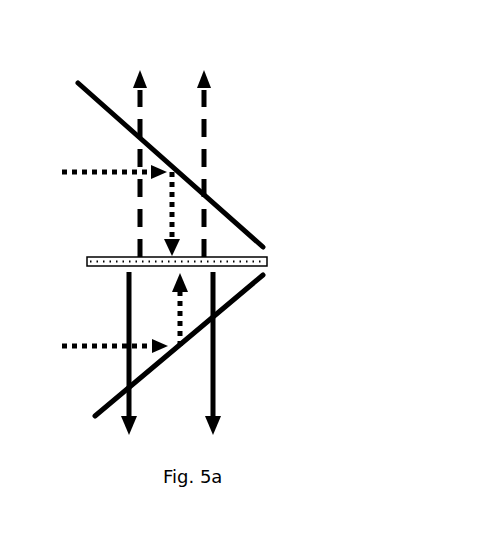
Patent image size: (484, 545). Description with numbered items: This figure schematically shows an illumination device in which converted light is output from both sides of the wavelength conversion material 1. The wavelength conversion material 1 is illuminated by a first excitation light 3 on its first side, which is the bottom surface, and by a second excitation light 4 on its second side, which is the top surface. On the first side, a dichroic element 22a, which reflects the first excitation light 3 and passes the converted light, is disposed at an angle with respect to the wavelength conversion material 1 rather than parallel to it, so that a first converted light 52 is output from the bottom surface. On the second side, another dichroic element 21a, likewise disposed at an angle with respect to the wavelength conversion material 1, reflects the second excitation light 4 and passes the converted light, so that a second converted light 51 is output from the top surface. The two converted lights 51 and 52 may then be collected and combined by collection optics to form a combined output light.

The wavelength conversion material 1 is at (218, 238).
The dichroic element 21a is at (223, 165).
The dichroic element 22a is at (230, 345).
The second excitation light 4 is at (205, 163).
The second converted light 51 is at (277, 145).
The first excitation light 3 is at (207, 353).
The first converted light 52 is at (281, 353).